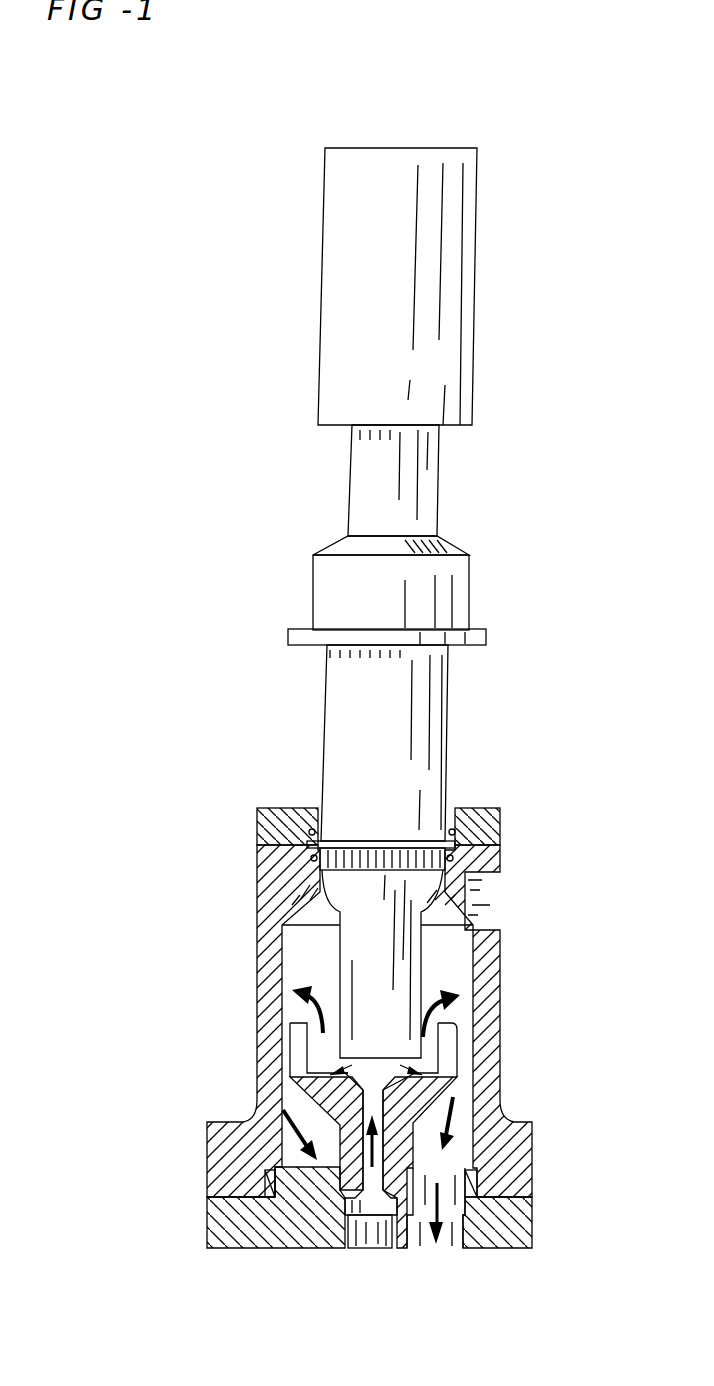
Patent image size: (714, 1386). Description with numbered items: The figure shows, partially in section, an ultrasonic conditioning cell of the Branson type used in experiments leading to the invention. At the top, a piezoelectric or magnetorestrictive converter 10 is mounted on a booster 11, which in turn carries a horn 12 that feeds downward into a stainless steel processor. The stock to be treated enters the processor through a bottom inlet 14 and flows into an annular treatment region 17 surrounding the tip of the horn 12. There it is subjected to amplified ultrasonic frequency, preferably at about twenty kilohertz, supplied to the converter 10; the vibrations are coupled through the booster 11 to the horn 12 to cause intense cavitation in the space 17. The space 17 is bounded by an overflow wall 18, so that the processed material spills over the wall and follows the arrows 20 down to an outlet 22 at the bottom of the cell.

The converter 10 is at (477, 305).
The booster 11 is at (470, 572).
The horn 12 is at (360, 972).
The bottom inlet 14 is at (372, 1235).
The annular treatment region 17 is at (435, 1030).
The overflow wall 18 is at (450, 1057).
The arrows 20 is at (445, 1150).
The outlet 22 is at (455, 1240).